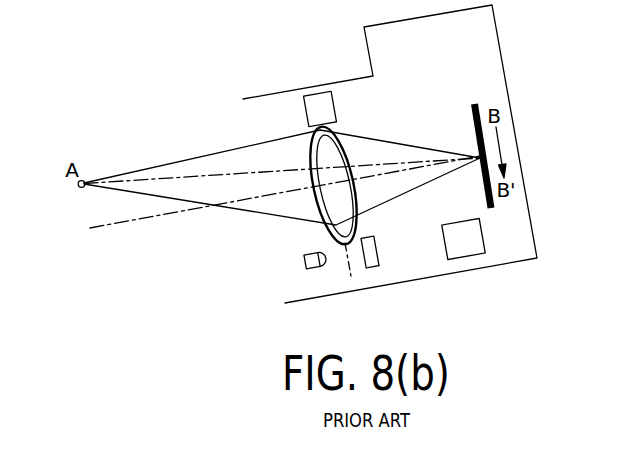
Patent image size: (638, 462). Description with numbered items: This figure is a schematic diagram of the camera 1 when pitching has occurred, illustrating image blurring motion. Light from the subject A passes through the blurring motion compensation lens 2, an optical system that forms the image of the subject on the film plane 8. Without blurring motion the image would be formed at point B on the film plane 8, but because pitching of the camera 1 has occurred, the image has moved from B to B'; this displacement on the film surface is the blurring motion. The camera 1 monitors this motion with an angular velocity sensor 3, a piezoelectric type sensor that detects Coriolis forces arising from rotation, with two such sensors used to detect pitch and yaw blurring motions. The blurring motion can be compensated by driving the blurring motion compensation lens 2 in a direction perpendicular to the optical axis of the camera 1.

The camera 1 is at (493, 25).
The blurring motion compensation lens 2 is at (322, 138).
The angular velocity sensor 3 is at (468, 250).
The film plane 8 is at (472, 105).